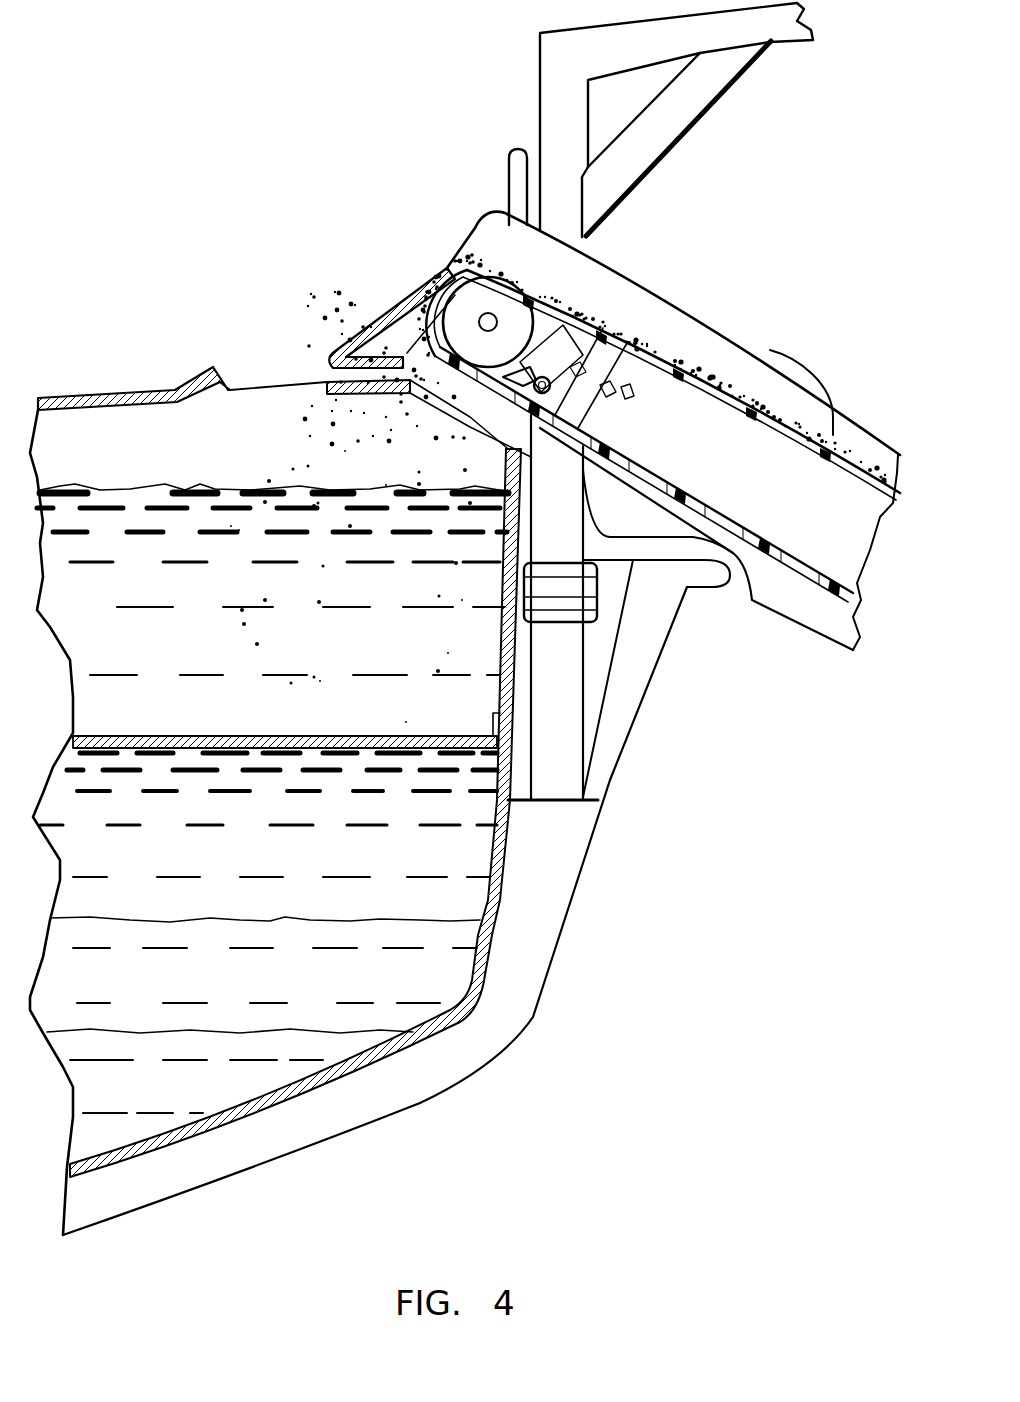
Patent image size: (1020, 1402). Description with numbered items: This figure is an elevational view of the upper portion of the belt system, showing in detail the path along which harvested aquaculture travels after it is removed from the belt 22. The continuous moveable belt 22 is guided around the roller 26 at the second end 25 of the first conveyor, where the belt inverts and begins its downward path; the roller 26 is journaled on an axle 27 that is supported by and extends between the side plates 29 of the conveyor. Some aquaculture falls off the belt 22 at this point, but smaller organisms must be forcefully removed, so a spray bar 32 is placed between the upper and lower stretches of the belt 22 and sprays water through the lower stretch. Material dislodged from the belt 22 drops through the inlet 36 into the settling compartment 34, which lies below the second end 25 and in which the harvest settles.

The belt 22 is at (730, 382).
The second end 25 is at (513, 325).
The roller 26 is at (477, 297).
The axle 27 is at (488, 313).
The side plates 29 is at (677, 310).
The spray bar 32 is at (560, 392).
The settling compartment 34 is at (155, 465).
The inlet 36 is at (410, 352).